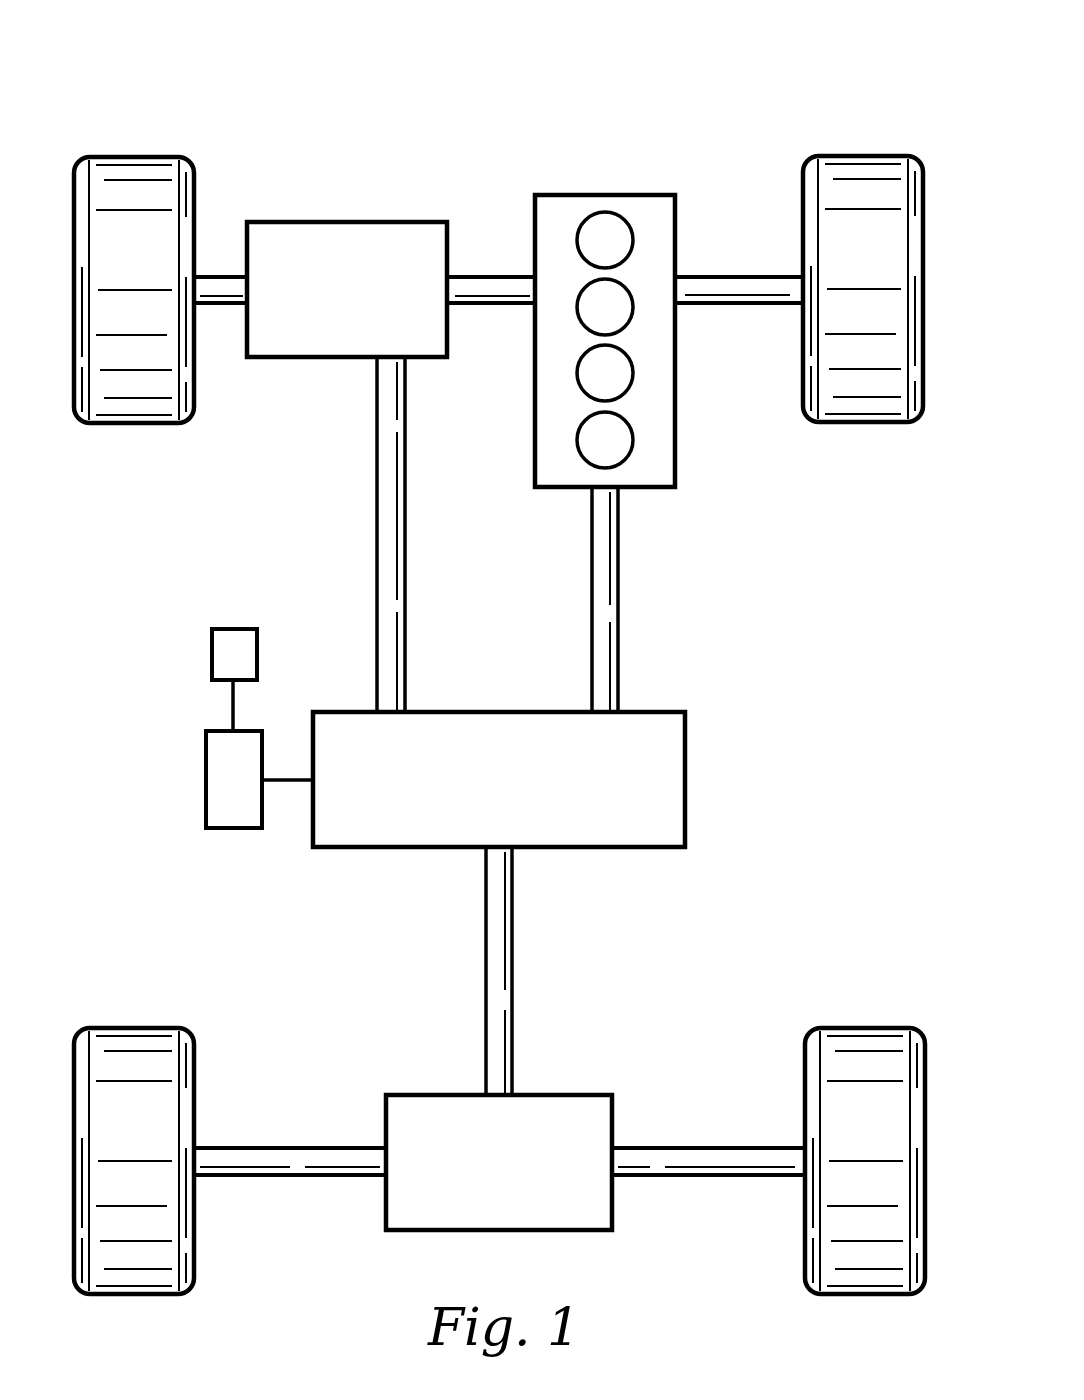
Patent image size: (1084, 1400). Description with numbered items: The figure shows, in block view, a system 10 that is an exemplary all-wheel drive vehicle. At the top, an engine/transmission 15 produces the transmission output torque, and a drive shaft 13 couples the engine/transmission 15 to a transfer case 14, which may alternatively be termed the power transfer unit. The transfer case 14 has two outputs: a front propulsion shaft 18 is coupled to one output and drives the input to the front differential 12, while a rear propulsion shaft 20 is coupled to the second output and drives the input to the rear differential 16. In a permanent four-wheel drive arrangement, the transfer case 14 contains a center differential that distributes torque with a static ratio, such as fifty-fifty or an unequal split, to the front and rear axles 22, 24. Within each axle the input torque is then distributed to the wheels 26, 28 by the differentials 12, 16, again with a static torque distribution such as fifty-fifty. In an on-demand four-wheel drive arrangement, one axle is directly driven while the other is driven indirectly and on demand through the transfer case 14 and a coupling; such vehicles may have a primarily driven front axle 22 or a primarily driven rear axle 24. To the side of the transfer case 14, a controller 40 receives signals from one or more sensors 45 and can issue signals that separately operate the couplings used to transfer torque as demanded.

The system 10 is at (758, 93).
The front differential 12 is at (358, 221).
The drive shaft 13 is at (619, 561).
The transfer case 14 is at (686, 786).
The engine/transmission 15 is at (677, 235).
The rear differential 16 is at (440, 1094).
The front propulsion shaft 18 is at (375, 531).
The rear propulsion shaft 20 is at (513, 980).
The front axle 22 is at (754, 305).
The rear axle 24 is at (714, 1147).
The wheels 26 is at (134, 156).
The wheels 28 is at (133, 1027).
The controller 40 is at (205, 783).
The sensors 45 is at (211, 655).